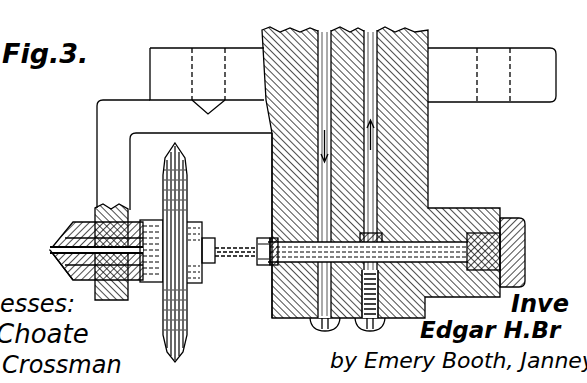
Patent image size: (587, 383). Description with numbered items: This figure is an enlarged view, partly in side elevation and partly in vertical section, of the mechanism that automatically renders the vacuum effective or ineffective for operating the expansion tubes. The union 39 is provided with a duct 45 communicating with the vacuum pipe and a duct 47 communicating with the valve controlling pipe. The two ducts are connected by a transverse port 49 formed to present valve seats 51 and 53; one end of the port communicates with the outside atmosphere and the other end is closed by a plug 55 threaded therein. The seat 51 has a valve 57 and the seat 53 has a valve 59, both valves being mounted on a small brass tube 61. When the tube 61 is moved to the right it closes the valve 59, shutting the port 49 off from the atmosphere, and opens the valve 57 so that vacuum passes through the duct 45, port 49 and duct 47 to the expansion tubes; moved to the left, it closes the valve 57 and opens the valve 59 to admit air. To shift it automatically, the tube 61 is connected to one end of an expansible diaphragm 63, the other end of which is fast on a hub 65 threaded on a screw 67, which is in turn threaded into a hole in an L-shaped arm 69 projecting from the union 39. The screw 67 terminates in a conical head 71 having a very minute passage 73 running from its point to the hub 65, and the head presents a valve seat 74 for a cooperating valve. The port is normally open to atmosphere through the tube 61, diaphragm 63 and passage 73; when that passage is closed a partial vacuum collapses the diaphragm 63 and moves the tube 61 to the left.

The union 39 is at (409, 44).
The duct 45 is at (428, 108).
The duct 47 is at (322, 138).
The transverse port 49 is at (273, 305).
The valve seat 51 is at (311, 326).
The valve seat 53 is at (272, 279).
The plug 55 is at (527, 237).
The valve 57 is at (375, 235).
The valve 59 is at (273, 243).
The tube 61 is at (292, 244).
The expansible diaphragm 63 is at (188, 180).
The hub 65 is at (153, 226).
The screw 67 is at (113, 218).
The L-shaped arm 69 is at (102, 146).
The conical head 71 is at (63, 267).
The minute passage 73 is at (67, 246).
The valve seat 74 is at (52, 250).